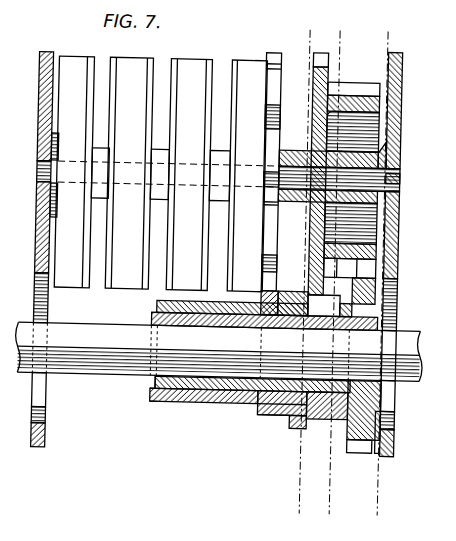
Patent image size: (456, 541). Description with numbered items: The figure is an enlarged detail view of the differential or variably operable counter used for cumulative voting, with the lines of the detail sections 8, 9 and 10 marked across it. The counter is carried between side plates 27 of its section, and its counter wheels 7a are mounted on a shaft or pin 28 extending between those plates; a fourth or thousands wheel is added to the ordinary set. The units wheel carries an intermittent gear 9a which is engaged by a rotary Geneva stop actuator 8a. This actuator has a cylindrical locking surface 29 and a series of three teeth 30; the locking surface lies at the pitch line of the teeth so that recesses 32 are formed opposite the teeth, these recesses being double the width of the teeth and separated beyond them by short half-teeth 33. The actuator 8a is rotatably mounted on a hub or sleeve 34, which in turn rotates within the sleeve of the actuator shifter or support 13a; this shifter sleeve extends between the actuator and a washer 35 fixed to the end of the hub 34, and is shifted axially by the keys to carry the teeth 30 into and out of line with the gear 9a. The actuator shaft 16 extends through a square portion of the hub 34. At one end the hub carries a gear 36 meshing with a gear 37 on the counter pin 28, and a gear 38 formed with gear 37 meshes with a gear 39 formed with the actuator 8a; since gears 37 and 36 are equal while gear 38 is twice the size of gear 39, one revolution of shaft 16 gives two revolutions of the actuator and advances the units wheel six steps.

The counter wheels 7a is at (223, 62).
The section line 8 is at (389, 510).
The rotary Geneva stop actuator 8a is at (265, 403).
The section line 9 is at (341, 510).
The intermittent gear 9a is at (265, 103).
The section line 10 is at (311, 510).
The actuator shifter or support 13a is at (203, 406).
The actuator shaft 16 is at (402, 332).
The side plates 27 is at (51, 445).
The shaft or pin 28 is at (386, 147).
The cylindrical locking surface 29 is at (270, 413).
The teeth 30 is at (303, 428).
The recesses 32 is at (266, 431).
The half-teeth 33 is at (291, 416).
The hub or sleeve 34 is at (163, 406).
The washer 35 is at (154, 397).
The gear 36 is at (389, 280).
The gear 37 is at (375, 230).
The gear 38 is at (312, 277).
The gear 39 is at (330, 411).